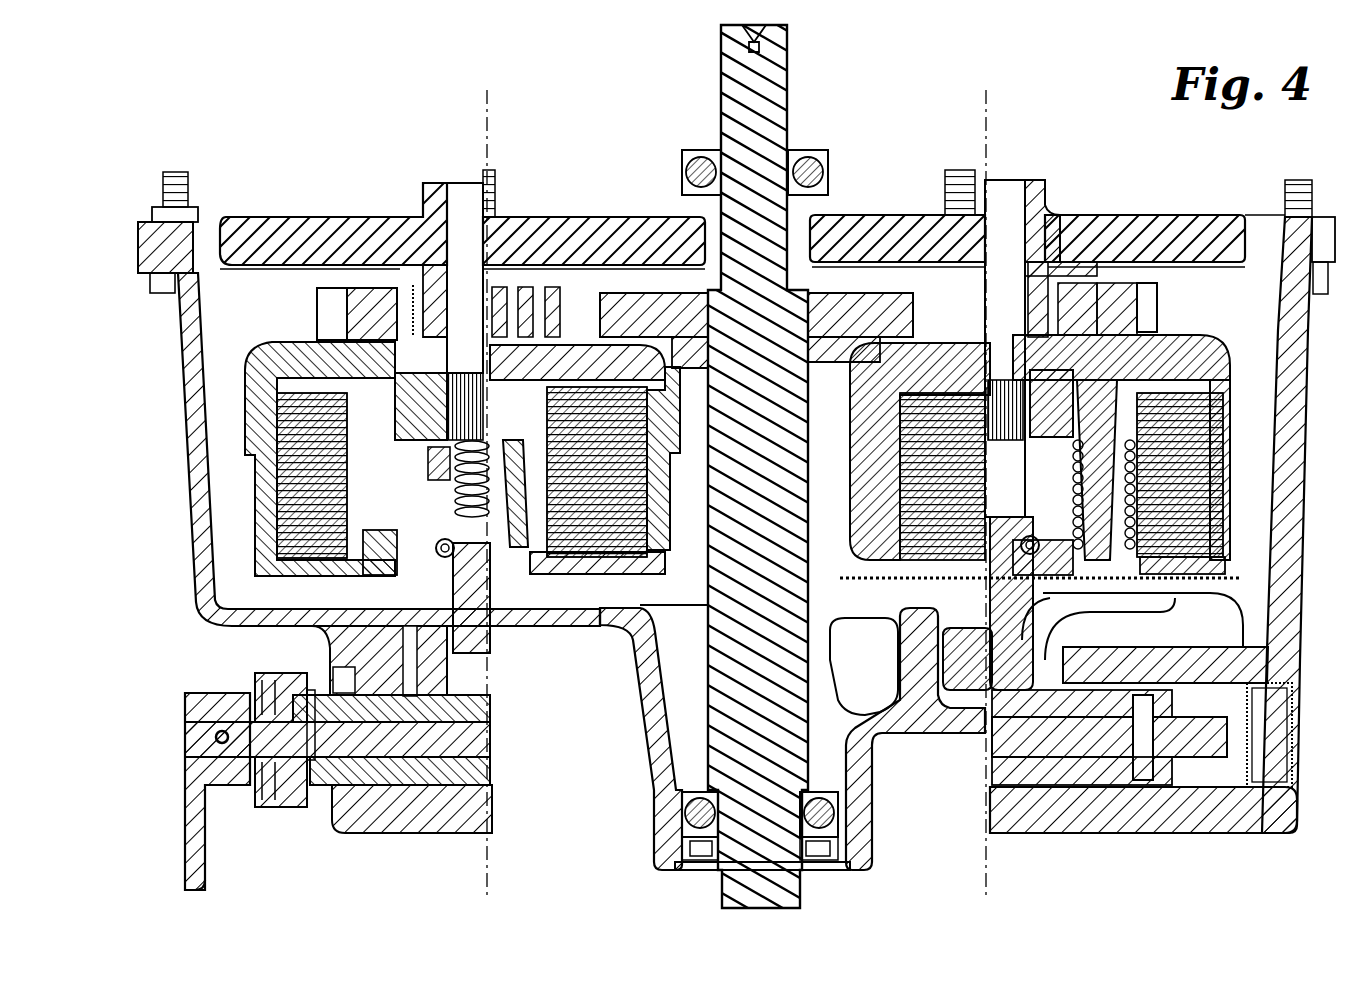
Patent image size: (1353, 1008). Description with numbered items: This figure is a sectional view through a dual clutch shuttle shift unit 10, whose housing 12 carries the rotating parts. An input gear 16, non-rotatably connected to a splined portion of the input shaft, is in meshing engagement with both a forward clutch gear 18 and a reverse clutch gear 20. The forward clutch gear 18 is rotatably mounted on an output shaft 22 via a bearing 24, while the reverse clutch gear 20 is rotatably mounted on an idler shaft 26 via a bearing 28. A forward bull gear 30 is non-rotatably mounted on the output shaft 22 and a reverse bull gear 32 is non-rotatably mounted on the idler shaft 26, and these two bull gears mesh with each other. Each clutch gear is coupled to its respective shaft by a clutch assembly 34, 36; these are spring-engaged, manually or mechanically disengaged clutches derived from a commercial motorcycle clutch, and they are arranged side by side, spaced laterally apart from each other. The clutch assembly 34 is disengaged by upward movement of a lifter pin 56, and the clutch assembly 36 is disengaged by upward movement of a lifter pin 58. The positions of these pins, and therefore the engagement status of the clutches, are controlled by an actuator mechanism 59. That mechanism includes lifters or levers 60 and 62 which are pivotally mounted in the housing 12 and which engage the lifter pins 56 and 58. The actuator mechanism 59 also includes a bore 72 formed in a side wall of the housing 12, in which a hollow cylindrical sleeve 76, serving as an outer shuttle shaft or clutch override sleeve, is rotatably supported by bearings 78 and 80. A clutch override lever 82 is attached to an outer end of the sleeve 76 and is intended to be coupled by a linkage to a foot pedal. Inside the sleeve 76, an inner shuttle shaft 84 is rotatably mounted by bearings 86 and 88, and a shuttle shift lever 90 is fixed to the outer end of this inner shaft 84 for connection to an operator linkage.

The dual clutch shuttle shift unit 10 is at (914, 130).
The housing 12 is at (1285, 470).
The input gear 16 is at (602, 262).
The forward clutch gear 18 is at (1150, 291).
The reverse clutch gear 20 is at (322, 305).
The output shaft 22 is at (1012, 248).
The bearing 24 is at (1082, 266).
The idler shaft 26 is at (463, 300).
The bearing 28 is at (386, 266).
The forward bull gear 30 is at (1175, 222).
The reverse bull gear 32 is at (607, 320).
The clutch assembly 34 is at (1238, 340).
The clutch assembly 36 is at (274, 334).
The lifter pin 56 is at (1020, 604).
The lifter pin 58 is at (473, 590).
The actuator mechanism 59 is at (160, 766).
The lifter 60 is at (1000, 676).
The lifter 62 is at (478, 652).
The bore 72 is at (1215, 782).
The hollow cylindrical sleeve 76 is at (992, 773).
The bearing 78 is at (1097, 662).
The bearing 80 is at (335, 668).
The clutch override lever 82 is at (277, 808).
The inner shuttle shaft 84 is at (442, 745).
The bearing 86 is at (1090, 762).
The bearing 88 is at (313, 760).
The shuttle shift lever 90 is at (200, 888).